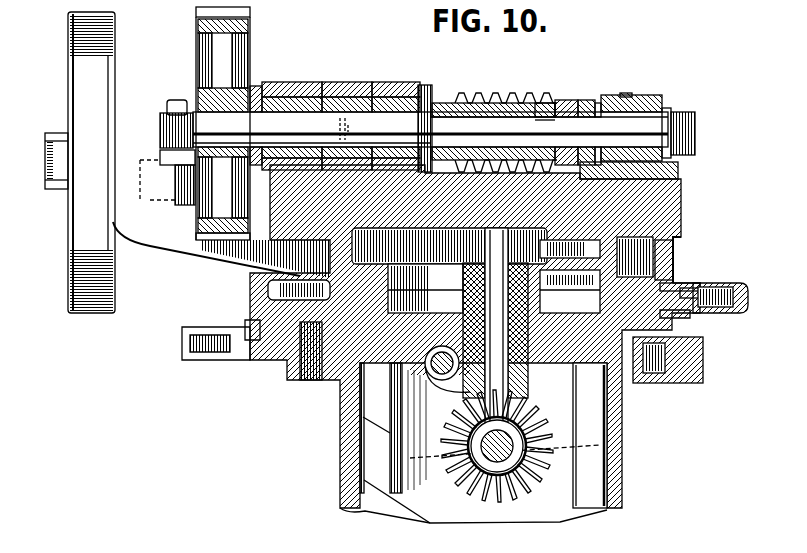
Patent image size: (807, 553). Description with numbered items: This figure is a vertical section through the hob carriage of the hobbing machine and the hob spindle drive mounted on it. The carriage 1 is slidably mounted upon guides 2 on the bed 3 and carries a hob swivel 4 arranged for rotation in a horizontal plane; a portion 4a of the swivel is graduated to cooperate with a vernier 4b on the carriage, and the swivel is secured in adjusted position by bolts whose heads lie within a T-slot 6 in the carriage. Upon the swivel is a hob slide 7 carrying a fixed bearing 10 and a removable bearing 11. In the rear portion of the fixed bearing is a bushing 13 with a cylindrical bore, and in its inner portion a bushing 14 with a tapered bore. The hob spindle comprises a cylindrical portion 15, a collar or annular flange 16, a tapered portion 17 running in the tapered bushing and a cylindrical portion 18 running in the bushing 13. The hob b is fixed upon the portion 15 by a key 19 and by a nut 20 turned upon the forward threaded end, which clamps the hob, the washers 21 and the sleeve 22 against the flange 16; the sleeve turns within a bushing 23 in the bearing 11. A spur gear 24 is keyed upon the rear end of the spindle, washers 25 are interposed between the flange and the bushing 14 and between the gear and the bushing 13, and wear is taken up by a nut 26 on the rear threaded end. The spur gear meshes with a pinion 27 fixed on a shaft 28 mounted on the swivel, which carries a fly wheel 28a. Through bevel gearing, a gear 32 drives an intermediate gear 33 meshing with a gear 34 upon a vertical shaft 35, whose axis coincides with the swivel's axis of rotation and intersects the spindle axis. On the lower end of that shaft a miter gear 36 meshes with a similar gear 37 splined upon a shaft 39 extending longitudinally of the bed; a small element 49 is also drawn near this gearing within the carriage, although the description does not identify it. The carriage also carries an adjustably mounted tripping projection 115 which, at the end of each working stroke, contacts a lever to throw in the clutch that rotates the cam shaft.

The carriage 1 is at (749, 305).
The guides 2 is at (313, 382).
The bed 3 is at (622, 489).
The hob swivel 4 is at (679, 236).
The graduated portion of the swivel 4a is at (678, 262).
The vernier 4b is at (698, 281).
The T-slot 6 is at (672, 316).
The hob slide 7 is at (681, 203).
The fixed bearing 10 is at (362, 92).
The removable bearing 11 is at (645, 96).
The bushing 13 is at (295, 120).
The bushing 14 is at (384, 95).
The cylindrical portion 15 is at (542, 103).
The collar or annular flange 16 is at (446, 102).
The tapered portion 17 is at (348, 112).
The cylindrical portion 18 is at (302, 118).
The key 19 is at (583, 100).
The nut 20 is at (680, 110).
The washers 21 is at (558, 128).
The sleeve 22 is at (600, 103).
The bushing 23 is at (678, 171).
The spur gear 24 is at (250, 14).
The washers 25 is at (256, 86).
The nut 26 is at (176, 100).
The pinion 27 is at (172, 182).
The shaft 28 is at (45, 189).
The fly wheel 28a is at (74, 82).
The gear 32 is at (425, 288).
The intermediate gear 33 is at (626, 257).
The gear 34 is at (548, 252).
The vertical shaft 35 is at (545, 282).
The miter gear 36 is at (540, 390).
The miter gear 37 is at (526, 470).
The shaft 39 is at (505, 467).
The ball 49 is at (432, 380).
The tripping projection 115 is at (188, 362).
The hob b is at (508, 95).